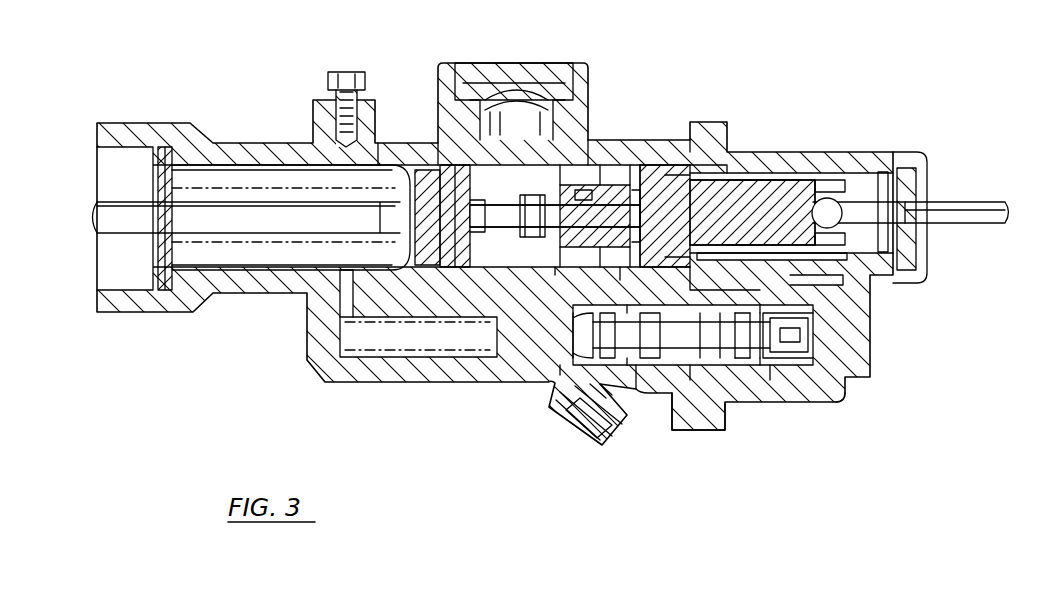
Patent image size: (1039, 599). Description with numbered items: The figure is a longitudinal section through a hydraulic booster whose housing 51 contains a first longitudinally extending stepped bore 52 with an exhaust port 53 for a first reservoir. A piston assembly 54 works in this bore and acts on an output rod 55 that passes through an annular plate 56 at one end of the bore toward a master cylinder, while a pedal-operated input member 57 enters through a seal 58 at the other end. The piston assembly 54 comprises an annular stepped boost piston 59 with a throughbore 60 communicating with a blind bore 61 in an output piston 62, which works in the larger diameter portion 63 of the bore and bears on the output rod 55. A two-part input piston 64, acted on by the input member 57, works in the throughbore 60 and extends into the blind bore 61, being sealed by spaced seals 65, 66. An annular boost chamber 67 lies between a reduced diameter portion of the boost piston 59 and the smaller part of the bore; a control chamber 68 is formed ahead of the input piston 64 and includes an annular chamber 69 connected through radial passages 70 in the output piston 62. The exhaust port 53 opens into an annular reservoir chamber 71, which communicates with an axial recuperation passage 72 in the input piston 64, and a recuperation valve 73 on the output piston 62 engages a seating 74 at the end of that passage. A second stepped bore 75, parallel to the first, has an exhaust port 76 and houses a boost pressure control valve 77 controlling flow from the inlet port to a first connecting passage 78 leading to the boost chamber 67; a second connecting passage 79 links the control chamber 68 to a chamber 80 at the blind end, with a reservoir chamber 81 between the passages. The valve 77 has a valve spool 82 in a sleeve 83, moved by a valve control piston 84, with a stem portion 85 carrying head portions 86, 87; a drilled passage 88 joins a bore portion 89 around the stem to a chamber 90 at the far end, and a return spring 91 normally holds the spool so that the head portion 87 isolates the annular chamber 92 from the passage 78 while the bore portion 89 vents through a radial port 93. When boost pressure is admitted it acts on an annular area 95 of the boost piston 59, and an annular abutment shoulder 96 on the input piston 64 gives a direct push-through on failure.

The housing 51 is at (682, 141).
The first longitudinally extending stepped bore 52 is at (617, 197).
The exhaust port 53 is at (518, 150).
The piston assembly 54 is at (430, 185).
The output rod 55 is at (255, 212).
The annular plate 56 is at (166, 150).
The pedal-operated input member 57 is at (960, 213).
The seal 58 is at (928, 187).
The boost piston 59 is at (795, 220).
The throughbore 60 is at (733, 185).
The blind bore 61 is at (610, 217).
The output piston 62 is at (442, 187).
The larger diameter portion 63 is at (384, 164).
The input piston 64 is at (837, 182).
The seal 65 is at (705, 190).
The seal 66 is at (583, 193).
The annular boost chamber 67 is at (770, 178).
The control chamber 68 is at (480, 225).
The annular chamber 69 is at (350, 128).
The radial passages 70 is at (473, 180).
The annular reservoir chamber 71 is at (637, 207).
The axial recuperation passage 72 is at (647, 193).
The recuperation valve 73 is at (537, 213).
The seating 74 is at (568, 250).
The second stepped bore 75 is at (560, 406).
The exhaust port 76 is at (583, 418).
The boost pressure control valve 77 is at (673, 332).
The first connecting passage 78 is at (675, 283).
The second connecting passage 79 is at (453, 300).
The chamber 80 is at (457, 338).
The reservoir chamber 81 is at (580, 433).
The valve spool 82 is at (737, 342).
The sleeve 83 is at (777, 365).
The valve control piston 84 is at (577, 372).
The stem portion 85 is at (643, 340).
The head portion 86 is at (578, 334).
The head portion 87 is at (760, 334).
The drilled passage 88 is at (838, 396).
The bore portion 89 is at (700, 340).
The chamber 90 is at (800, 326).
The return spring 91 is at (808, 338).
The annular chamber 92 is at (707, 367).
The radial port 93 is at (613, 414).
The annular area 95 is at (708, 262).
The annular abutment shoulder 96 is at (880, 187).